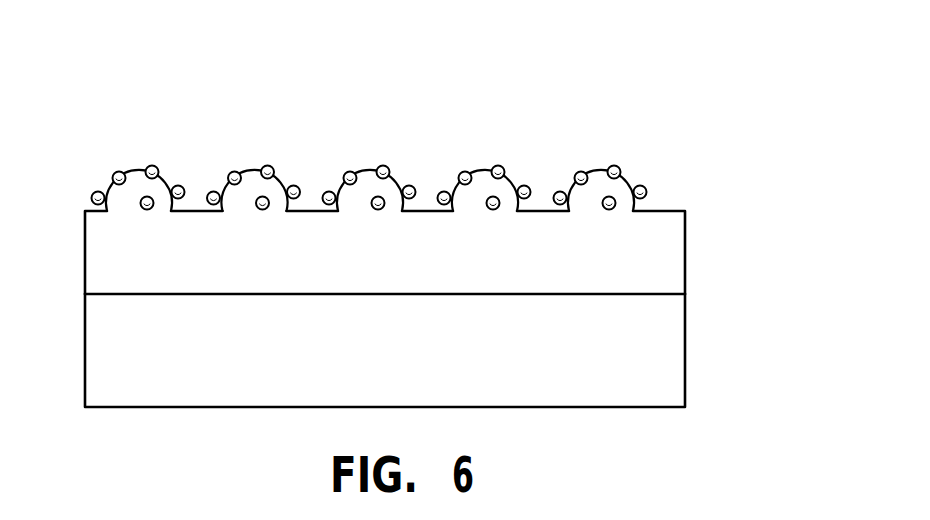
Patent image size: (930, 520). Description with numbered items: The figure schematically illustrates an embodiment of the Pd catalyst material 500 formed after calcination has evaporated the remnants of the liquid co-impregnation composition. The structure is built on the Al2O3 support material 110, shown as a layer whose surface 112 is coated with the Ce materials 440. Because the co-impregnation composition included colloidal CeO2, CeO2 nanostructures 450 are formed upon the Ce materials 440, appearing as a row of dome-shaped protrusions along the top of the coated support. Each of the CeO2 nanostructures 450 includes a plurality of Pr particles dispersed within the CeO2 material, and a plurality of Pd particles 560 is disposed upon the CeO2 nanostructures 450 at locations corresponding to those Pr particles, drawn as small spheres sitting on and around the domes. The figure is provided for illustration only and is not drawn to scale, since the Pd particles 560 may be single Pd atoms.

The Pd catalyst material 500 is at (688, 106).
The Al2O3 support material 110 is at (670, 368).
The surface 112 is at (645, 295).
The Ce materials 440 is at (670, 250).
The CeO2 nanostructures 450 is at (140, 170).
The Pd particles 560 is at (113, 172).